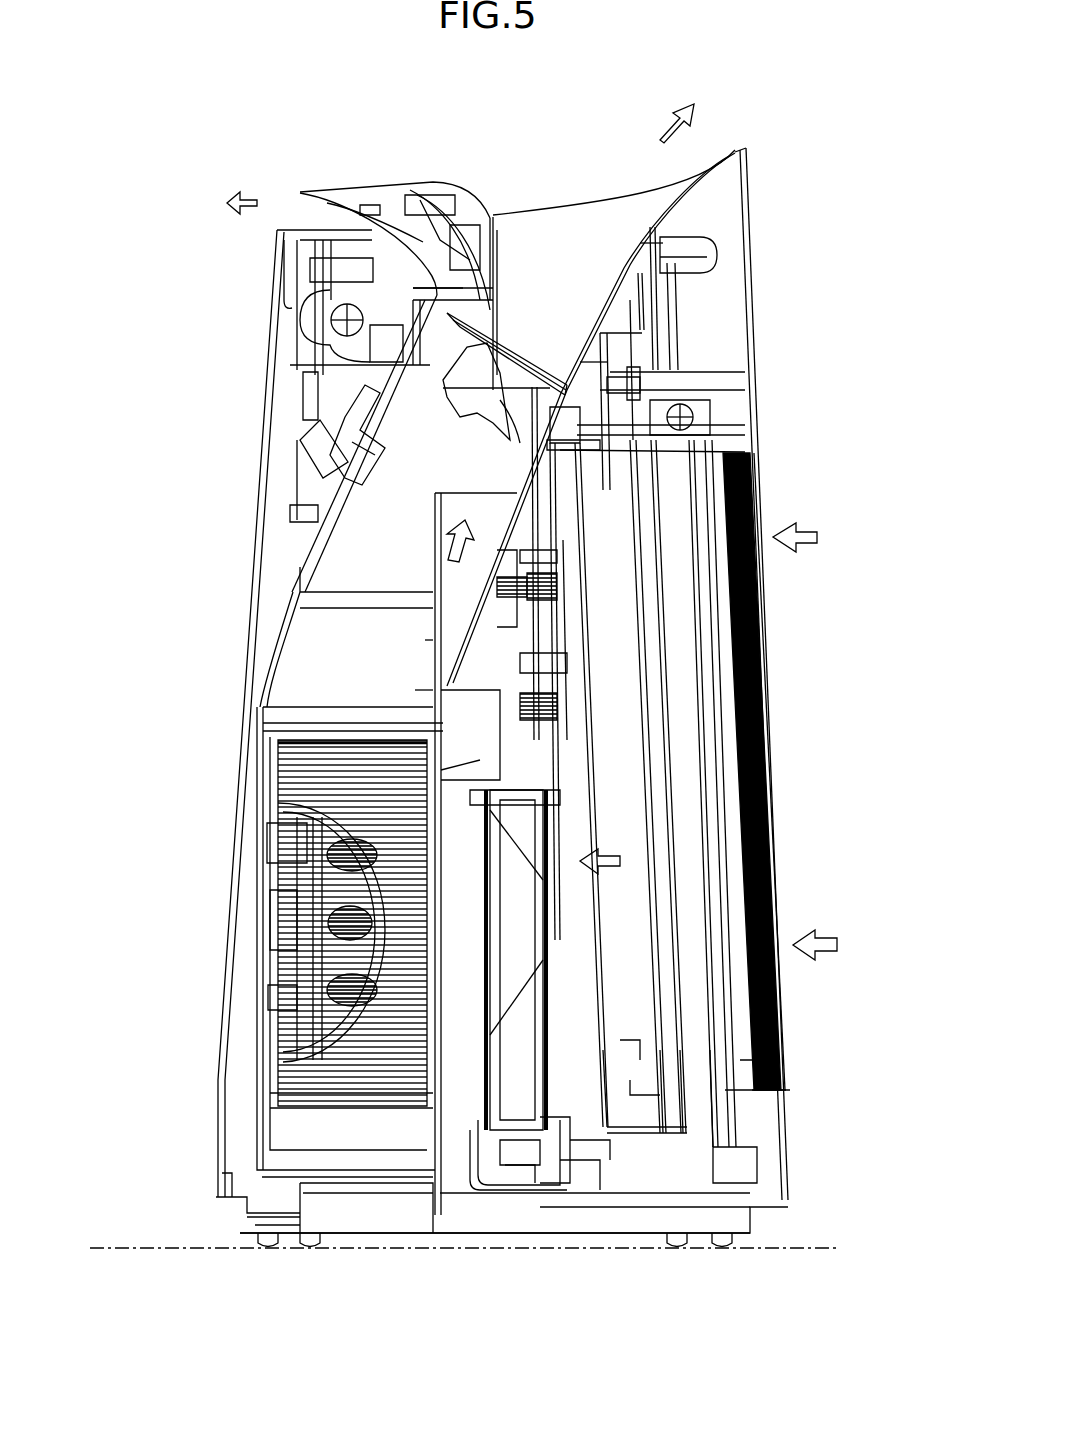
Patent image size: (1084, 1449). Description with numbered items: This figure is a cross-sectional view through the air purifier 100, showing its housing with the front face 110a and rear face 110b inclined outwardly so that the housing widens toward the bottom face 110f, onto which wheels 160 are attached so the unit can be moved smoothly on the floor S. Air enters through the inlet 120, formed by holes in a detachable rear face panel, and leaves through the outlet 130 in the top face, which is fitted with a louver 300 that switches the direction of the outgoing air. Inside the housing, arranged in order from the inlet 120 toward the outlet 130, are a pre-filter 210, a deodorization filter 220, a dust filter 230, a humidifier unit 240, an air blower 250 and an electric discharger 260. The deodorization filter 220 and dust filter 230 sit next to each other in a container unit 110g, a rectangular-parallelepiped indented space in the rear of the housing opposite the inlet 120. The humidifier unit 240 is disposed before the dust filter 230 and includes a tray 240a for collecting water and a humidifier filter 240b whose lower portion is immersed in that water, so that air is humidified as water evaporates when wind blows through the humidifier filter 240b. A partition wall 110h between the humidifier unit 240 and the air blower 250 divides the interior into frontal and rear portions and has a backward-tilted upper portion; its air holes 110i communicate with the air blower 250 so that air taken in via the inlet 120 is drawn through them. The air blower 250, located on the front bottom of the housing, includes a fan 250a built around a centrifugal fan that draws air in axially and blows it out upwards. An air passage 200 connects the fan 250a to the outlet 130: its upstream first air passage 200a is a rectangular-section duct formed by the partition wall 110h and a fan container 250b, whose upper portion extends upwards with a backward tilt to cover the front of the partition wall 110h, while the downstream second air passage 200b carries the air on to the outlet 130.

The air purifier 100 is at (780, 122).
The front face 110a is at (272, 331).
The rear face 110b is at (740, 240).
The bottom face 110f is at (358, 1232).
The container unit 110g is at (652, 448).
The partition wall 110h is at (510, 520).
The air holes 110i is at (433, 977).
The inlet 120 is at (765, 624).
The outlet 130 is at (572, 200).
The wheels 160 is at (262, 1245).
The air passage 200 is at (302, 628).
The first air passage 200a is at (420, 558).
The second air passage 200b is at (595, 322).
The pre-filter 210 is at (767, 772).
The deodorization filter 220 is at (660, 870).
The dust filter 230 is at (637, 913).
The humidifier unit 240 is at (470, 1205).
The tray 240a is at (545, 1237).
The humidifier filter 240b is at (540, 1170).
The air blower 250 is at (245, 936).
The fan 250a is at (320, 763).
The fan container 250b is at (300, 567).
The electric discharger 260 is at (352, 420).
The louver 300 is at (399, 162).
The floor S is at (158, 1248).